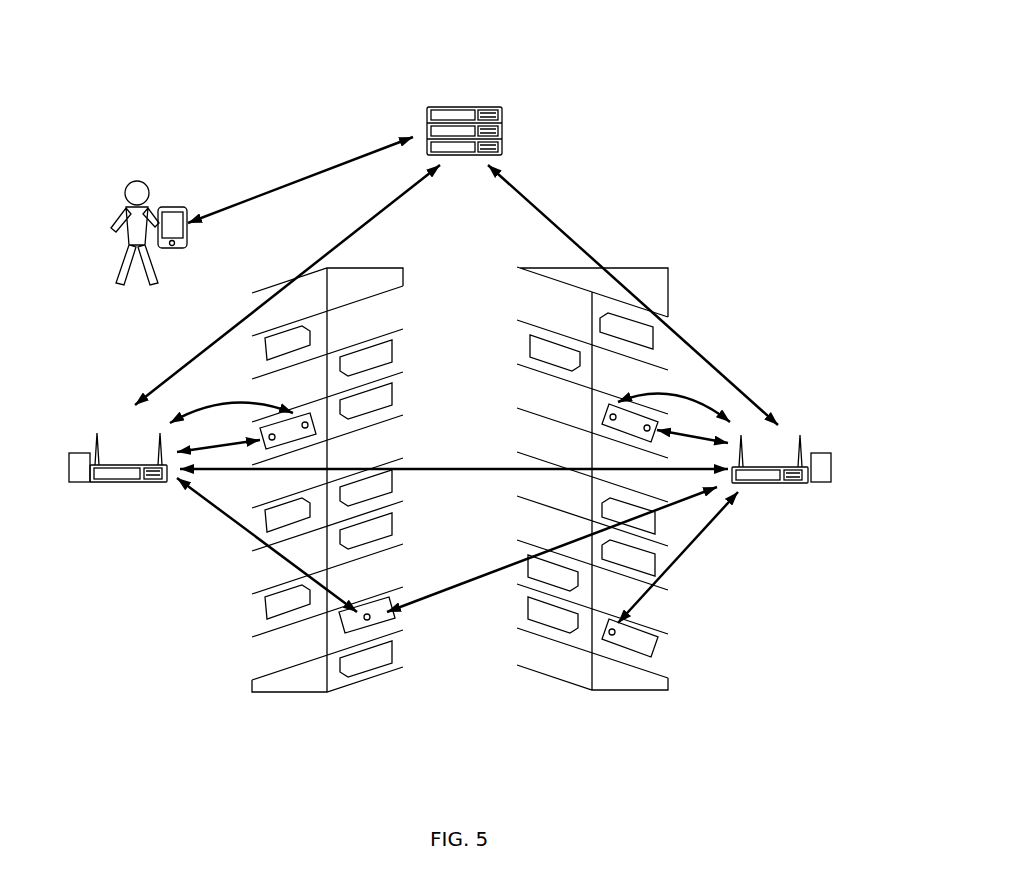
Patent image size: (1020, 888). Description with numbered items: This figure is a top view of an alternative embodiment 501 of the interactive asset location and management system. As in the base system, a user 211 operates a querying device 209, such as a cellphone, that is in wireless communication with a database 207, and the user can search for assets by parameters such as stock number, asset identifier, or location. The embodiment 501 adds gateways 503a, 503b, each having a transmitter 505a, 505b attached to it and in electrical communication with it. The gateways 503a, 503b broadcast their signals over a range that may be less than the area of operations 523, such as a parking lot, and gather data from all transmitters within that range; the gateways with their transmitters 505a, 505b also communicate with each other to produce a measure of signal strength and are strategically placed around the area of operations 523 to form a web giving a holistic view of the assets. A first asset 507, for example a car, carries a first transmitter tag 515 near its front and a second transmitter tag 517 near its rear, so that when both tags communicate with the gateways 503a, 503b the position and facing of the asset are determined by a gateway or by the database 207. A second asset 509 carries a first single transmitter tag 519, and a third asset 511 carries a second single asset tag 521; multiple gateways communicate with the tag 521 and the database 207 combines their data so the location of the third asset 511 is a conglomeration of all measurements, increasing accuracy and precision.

The embodiment 501 is at (136, 66).
The database 207 is at (503, 113).
The querying device 209 is at (165, 207).
The user 211 is at (125, 193).
The area of operations 523 is at (706, 240).
The gateway 503a is at (800, 440).
The gateway 503b is at (97, 447).
The transmitter 505a is at (832, 470).
The transmitter 505b is at (78, 482).
The first asset 507 is at (522, 469).
The second asset 509 is at (660, 640).
The third asset 511 is at (395, 612).
The first transmitter tag 515 is at (610, 418).
The second transmitter tag 517 is at (645, 430).
The first single transmitter tag 519 is at (613, 635).
The second single asset tag 521 is at (367, 620).